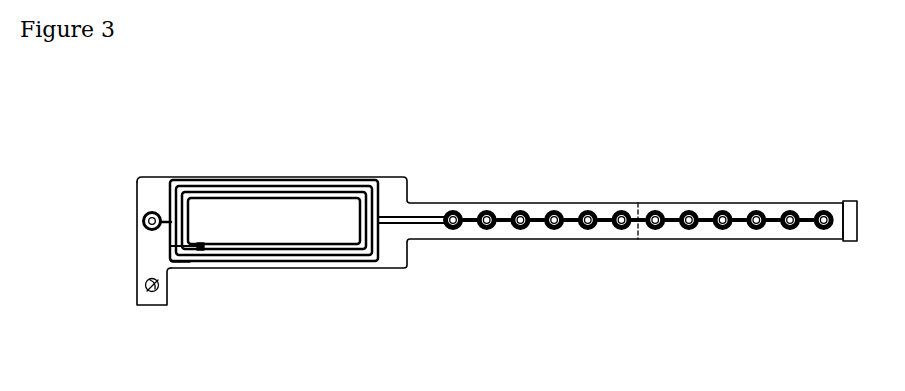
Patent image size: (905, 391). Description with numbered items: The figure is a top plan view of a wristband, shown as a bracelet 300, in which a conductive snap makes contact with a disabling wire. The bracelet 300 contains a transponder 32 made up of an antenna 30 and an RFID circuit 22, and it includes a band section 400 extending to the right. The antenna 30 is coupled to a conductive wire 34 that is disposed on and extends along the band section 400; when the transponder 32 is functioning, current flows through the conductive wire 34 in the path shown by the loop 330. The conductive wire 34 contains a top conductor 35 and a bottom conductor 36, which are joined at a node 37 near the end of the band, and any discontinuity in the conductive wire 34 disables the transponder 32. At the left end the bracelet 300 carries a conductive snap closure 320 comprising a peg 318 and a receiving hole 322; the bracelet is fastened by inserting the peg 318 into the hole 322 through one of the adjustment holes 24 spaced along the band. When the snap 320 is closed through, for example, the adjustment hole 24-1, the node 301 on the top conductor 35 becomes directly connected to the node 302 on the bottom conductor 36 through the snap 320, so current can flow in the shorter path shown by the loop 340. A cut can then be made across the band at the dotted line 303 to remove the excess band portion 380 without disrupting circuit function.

The bracelet 300 is at (288, 148).
The peg 318 is at (142, 218).
The conductive snap closure 320 is at (79, 188).
The receiving hole 322 is at (145, 291).
The RFID circuit 22 is at (195, 263).
The antenna 30 is at (282, 260).
The transponder 32 is at (370, 327).
The conductive wire 34 is at (441, 240).
The adjustment holes 24 is at (518, 207).
The loop 340 is at (600, 207).
The adjustment hole 24-1 is at (600, 236).
The node 301 is at (627, 202).
The node 302 is at (617, 233).
The dotted line 303 is at (643, 203).
The excess band portion 380 is at (853, 133).
The band section 400 is at (677, 260).
The bottom conductor 36 is at (733, 233).
The top conductor 35 is at (738, 213).
The node 37 is at (830, 243).
The loop 330 is at (843, 203).